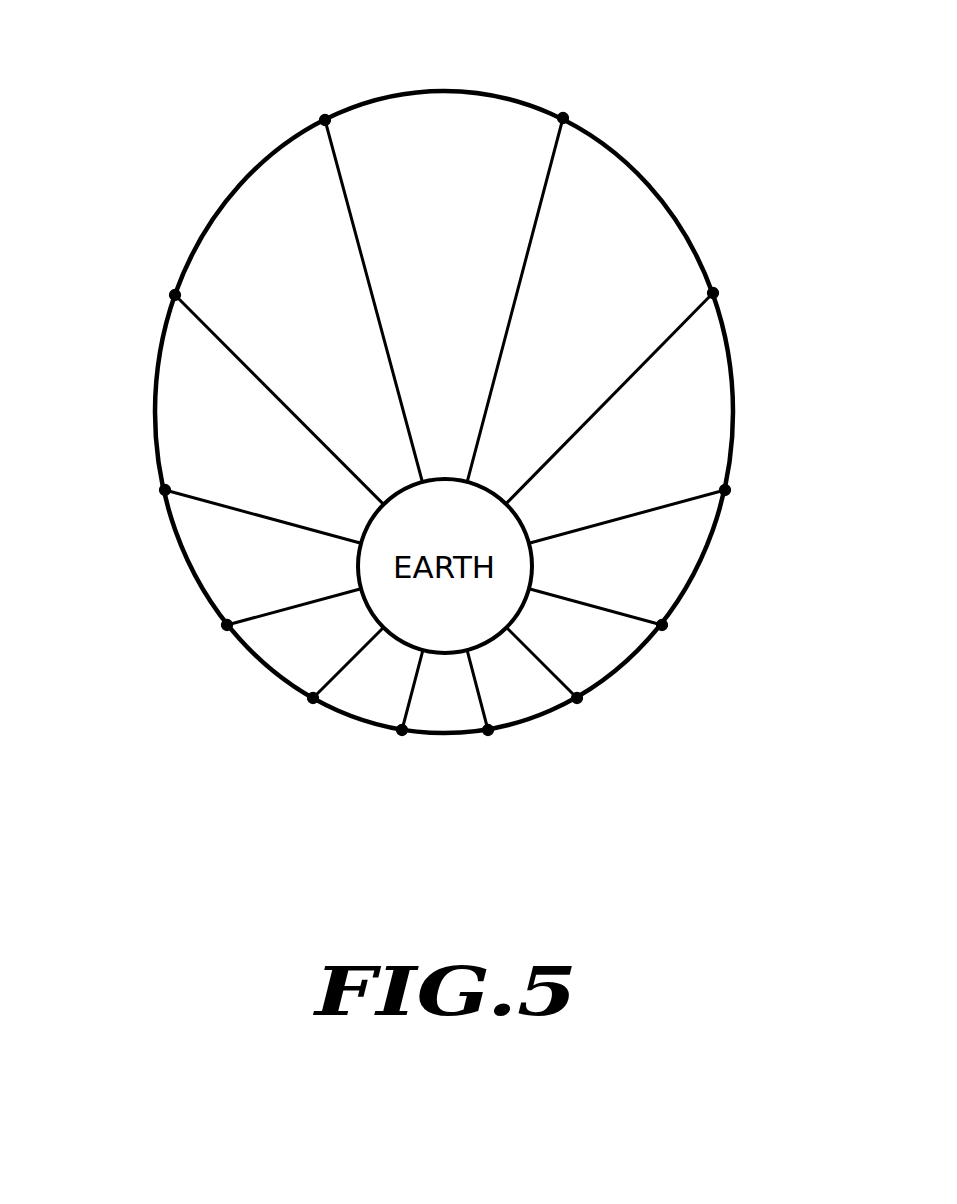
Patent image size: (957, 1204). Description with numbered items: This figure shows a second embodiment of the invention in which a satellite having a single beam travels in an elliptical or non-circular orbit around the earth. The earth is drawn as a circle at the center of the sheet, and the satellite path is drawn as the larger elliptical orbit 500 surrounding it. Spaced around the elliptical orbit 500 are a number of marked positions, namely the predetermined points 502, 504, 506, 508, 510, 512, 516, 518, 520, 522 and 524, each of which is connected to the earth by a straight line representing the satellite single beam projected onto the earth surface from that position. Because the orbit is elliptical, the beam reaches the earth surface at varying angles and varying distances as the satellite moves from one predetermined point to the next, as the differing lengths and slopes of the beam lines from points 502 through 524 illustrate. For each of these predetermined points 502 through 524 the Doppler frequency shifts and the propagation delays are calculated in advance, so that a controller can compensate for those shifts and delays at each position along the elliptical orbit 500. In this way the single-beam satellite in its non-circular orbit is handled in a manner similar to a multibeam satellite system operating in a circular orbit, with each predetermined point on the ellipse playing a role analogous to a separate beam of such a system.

The elliptical orbit 500 is at (663, 197).
The predetermined point 502 is at (488, 730).
The predetermined point 504 is at (577, 698).
The predetermined point 506 is at (662, 625).
The predetermined point 508 is at (725, 490).
The predetermined point 510 is at (713, 293).
The predetermined point 512 is at (563, 118).
The predetermined point 516 is at (175, 295).
The predetermined point 518 is at (325, 120).
The predetermined point 520 is at (227, 625).
The predetermined point 522 is at (313, 698).
The predetermined point 524 is at (402, 730).